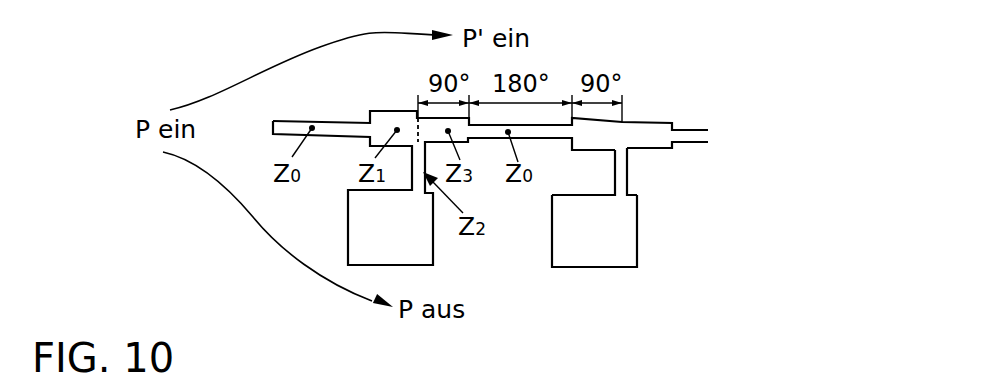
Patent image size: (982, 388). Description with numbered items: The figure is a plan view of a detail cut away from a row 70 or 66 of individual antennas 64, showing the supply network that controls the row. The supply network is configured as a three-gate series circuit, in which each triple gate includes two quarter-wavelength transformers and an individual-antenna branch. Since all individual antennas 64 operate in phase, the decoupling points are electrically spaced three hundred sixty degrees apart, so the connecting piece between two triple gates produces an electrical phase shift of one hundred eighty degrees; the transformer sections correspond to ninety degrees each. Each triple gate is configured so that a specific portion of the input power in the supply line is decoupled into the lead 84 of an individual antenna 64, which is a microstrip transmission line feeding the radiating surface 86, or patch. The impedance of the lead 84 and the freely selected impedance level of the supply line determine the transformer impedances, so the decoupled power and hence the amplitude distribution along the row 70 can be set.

The individual antenna 64 is at (518, 202).
The row of individual antennas 66 is at (695, 110).
The row of individual antennas 70 is at (684, 136).
The lead 84 is at (620, 171).
The radiating surface 86 is at (605, 253).